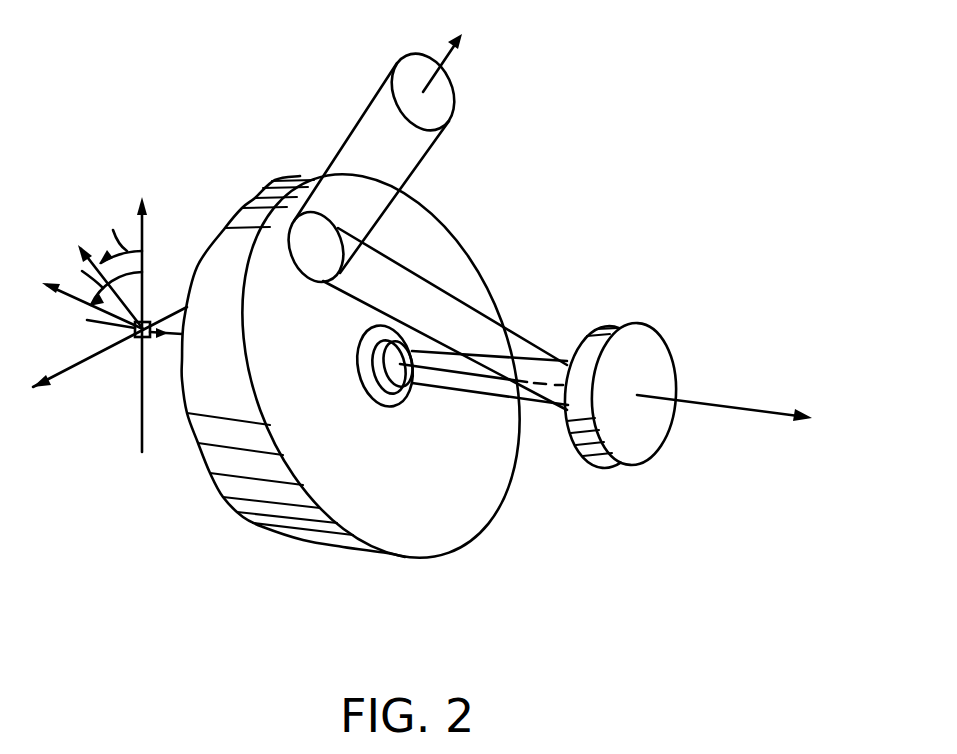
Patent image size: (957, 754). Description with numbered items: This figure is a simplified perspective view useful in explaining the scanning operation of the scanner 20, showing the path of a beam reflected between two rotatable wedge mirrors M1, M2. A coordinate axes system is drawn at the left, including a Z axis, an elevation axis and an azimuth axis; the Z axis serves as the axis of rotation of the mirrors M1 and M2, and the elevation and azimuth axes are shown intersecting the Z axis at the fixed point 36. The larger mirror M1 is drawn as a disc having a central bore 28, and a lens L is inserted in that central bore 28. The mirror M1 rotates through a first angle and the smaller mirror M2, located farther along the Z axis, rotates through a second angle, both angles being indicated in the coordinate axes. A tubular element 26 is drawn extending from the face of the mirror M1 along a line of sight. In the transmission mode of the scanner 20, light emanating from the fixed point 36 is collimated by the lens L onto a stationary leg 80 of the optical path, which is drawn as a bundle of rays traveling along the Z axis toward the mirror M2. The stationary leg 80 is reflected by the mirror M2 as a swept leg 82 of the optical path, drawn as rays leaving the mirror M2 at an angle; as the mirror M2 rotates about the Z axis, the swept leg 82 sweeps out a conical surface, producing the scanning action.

The scanner 20 is at (232, 585).
The line-of-sight telescope tube 26 is at (422, 160).
The central bore 28 is at (389, 399).
The fixed point 36 is at (148, 320).
The stationary leg 80 is at (497, 393).
The swept leg 82 is at (535, 346).
The lens L is at (373, 373).
The mirror M1 is at (474, 533).
The mirror M2 is at (650, 462).